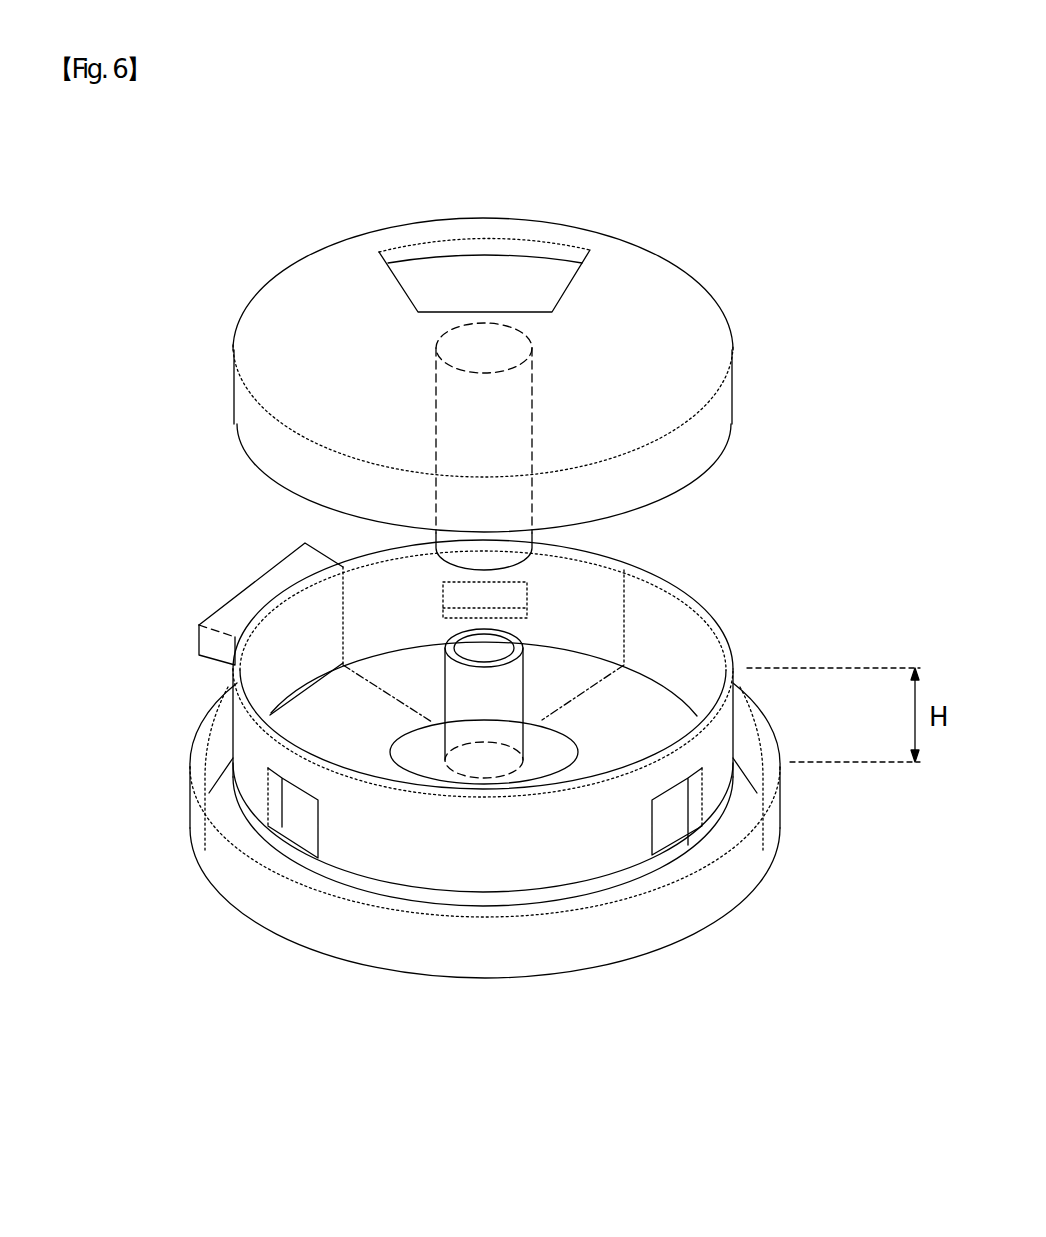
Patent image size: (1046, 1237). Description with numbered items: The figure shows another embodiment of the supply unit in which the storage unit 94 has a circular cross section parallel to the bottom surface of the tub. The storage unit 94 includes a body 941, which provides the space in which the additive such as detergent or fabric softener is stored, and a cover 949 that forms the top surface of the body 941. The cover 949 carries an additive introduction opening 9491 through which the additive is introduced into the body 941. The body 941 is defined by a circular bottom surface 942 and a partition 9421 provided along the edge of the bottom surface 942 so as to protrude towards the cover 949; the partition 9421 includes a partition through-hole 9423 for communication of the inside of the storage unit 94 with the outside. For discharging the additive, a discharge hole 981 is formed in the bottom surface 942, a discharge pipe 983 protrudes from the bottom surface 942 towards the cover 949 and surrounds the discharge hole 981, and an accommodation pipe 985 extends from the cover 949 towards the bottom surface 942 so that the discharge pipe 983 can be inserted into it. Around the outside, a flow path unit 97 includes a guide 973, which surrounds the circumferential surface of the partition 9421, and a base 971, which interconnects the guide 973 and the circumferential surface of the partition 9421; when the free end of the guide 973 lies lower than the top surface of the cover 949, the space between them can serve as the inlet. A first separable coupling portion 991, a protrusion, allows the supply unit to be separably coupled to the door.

The storage unit 94 is at (822, 298).
The cover 949 is at (725, 319).
The additive introduction opening 9491 is at (488, 270).
The body 941 is at (628, 686).
The bottom surface 942 is at (435, 775).
The partition 9421 is at (383, 842).
The partition through-hole 9423 is at (468, 590).
The accommodation pipe 985 is at (457, 548).
The discharge pipe 983 is at (460, 712).
The discharge hole 981 is at (452, 750).
The first separable coupling portion 991 is at (228, 613).
The flow path unit 97 is at (688, 1025).
The base 971 is at (563, 898).
The guide 973 is at (625, 947).